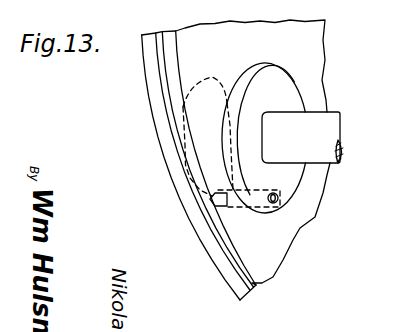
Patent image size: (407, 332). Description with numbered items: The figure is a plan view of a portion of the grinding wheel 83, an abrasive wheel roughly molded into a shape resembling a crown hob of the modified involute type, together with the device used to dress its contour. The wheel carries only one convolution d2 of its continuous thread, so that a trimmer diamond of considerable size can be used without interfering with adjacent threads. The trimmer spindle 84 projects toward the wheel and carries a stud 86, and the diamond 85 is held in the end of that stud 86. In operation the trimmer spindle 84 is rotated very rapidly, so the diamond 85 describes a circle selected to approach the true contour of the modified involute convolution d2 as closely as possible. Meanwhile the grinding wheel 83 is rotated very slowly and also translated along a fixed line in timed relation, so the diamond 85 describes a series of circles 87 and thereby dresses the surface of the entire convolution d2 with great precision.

The modified involute convolution d2 is at (167, 45).
The grinding wheel 83 is at (302, 48).
The trimmer spindle 84 is at (382, 113).
The diamond 85 is at (213, 196).
The stud 86 is at (226, 205).
The series of circles 87 is at (212, 77).